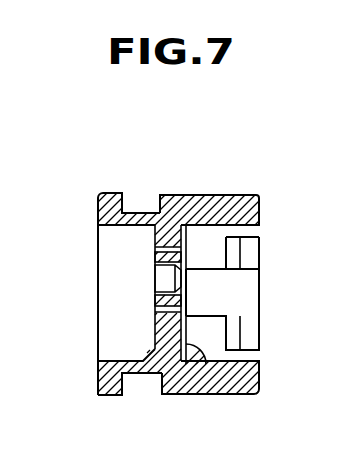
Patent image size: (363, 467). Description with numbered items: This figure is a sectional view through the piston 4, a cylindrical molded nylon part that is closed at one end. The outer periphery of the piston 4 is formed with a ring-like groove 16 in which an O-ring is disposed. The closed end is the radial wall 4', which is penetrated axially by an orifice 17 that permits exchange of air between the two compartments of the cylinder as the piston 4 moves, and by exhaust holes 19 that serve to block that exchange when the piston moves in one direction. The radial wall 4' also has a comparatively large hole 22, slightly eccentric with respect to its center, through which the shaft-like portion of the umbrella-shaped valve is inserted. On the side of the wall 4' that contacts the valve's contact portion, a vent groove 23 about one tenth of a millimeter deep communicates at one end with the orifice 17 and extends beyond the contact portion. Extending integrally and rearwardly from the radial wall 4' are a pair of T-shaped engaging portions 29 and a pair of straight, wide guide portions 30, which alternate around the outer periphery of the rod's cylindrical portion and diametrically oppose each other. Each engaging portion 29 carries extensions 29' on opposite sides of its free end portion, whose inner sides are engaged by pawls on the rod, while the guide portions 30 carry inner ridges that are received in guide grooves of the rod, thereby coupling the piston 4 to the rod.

The piston 4 is at (70, 266).
The radial wall 4' is at (130, 397).
The ring-like groove 16 is at (129, 210).
The orifice 17 is at (160, 303).
The exhaust holes 19 is at (157, 250).
The hole 22 is at (162, 273).
The vent groove 23 is at (207, 392).
The T-shaped engaging portions 29 is at (254, 293).
The extensions 29' is at (288, 284).
The guide portions 30 is at (215, 204).